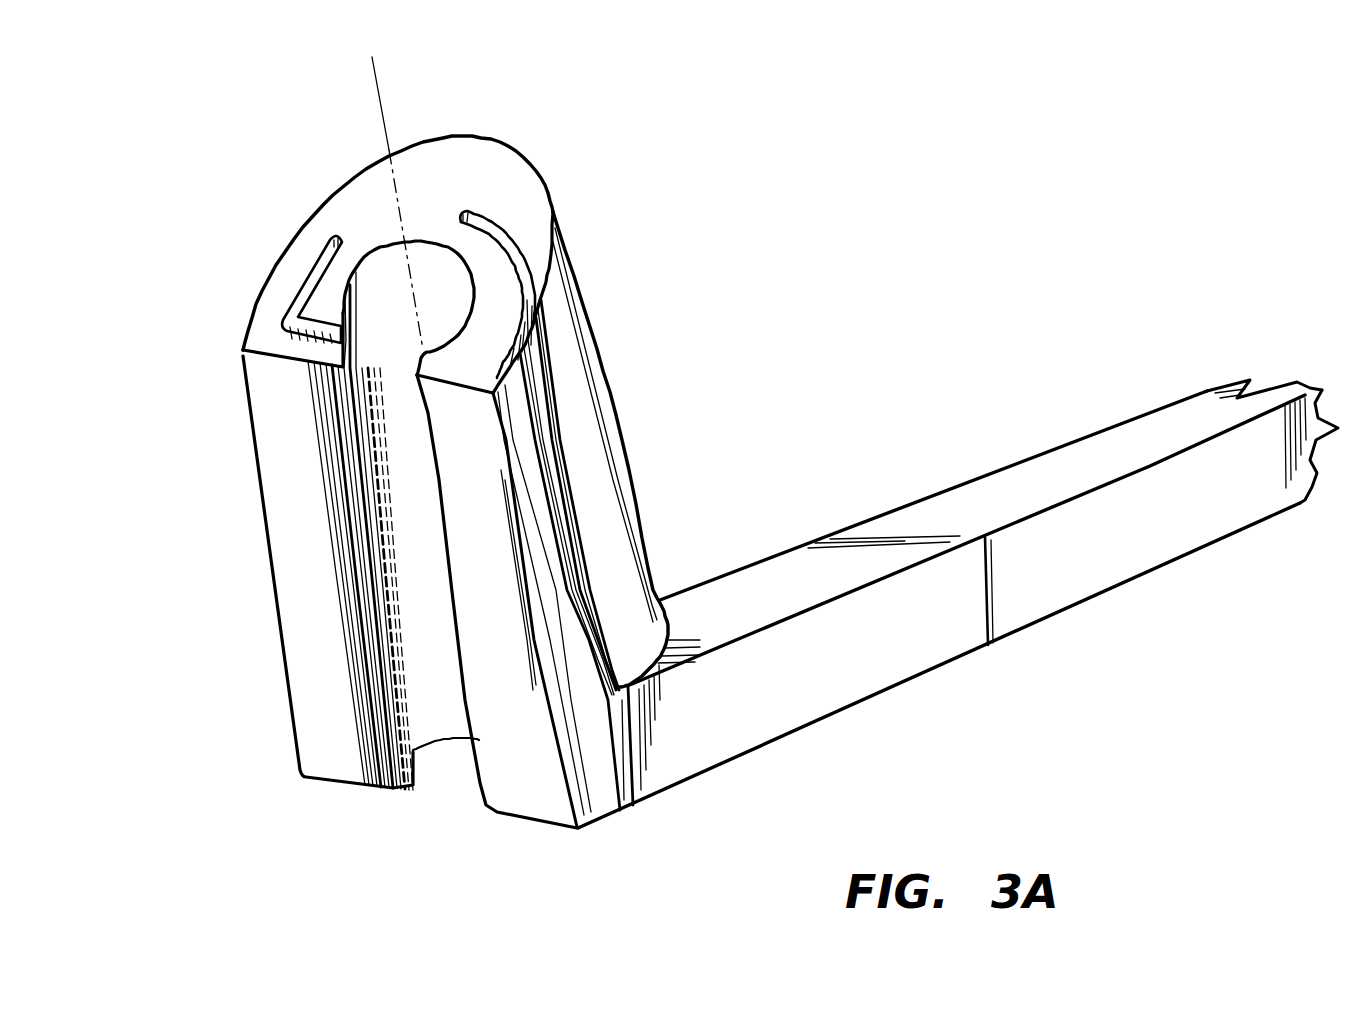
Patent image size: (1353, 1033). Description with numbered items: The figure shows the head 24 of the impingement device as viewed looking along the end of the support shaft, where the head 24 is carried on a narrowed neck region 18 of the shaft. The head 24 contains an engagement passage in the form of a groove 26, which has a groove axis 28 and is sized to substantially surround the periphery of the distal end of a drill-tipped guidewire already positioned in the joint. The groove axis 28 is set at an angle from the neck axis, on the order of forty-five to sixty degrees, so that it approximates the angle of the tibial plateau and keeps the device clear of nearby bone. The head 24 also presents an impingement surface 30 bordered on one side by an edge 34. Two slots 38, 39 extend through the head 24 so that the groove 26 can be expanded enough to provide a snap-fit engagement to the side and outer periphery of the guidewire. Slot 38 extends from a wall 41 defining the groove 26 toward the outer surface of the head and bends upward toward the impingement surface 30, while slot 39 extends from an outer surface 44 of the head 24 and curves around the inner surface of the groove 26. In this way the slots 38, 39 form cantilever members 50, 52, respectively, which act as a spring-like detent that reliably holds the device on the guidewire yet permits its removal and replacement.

The narrowed neck region 18 is at (921, 636).
The head 24 is at (334, 624).
The groove 26 is at (399, 331).
The groove axis 28 is at (377, 92).
The impingement surface 30 is at (592, 327).
The edge 34 is at (487, 137).
The slot 38 is at (318, 246).
The slot 39 is at (522, 263).
The wall 41 is at (382, 455).
The outer surface 44 is at (540, 520).
The cantilever member 50 is at (278, 347).
The cantilever member 52 is at (475, 372).